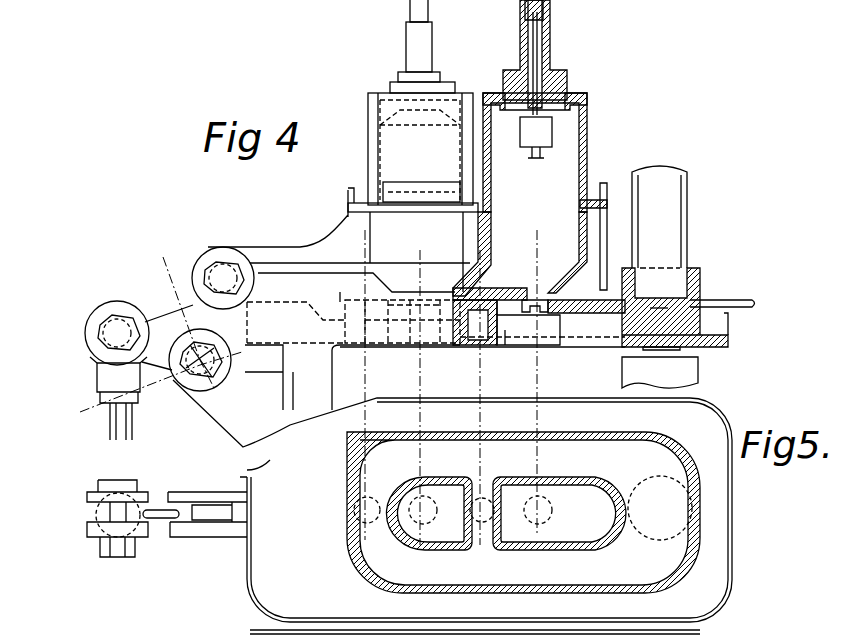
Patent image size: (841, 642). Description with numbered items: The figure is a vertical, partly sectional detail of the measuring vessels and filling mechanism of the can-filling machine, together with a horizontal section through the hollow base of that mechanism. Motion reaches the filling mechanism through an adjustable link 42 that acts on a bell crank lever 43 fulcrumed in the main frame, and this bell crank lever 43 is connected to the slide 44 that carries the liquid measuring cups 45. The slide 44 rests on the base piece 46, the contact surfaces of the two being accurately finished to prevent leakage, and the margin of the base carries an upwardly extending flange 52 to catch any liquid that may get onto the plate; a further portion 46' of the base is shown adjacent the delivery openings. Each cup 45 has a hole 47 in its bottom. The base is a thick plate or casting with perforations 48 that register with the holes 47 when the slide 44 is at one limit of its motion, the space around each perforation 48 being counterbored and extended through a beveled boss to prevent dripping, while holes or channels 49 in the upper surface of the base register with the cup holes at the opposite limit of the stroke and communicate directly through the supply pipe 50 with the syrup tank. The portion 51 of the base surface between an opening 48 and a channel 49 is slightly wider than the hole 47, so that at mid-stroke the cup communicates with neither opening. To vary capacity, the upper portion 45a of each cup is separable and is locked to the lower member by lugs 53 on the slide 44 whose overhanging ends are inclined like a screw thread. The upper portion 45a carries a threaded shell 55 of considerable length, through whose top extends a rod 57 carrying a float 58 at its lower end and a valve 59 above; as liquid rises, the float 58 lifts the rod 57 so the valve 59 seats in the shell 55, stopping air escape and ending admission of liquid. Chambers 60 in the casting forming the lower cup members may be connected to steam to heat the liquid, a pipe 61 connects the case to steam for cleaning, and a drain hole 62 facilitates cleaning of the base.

In FIG. 4, the adjustable link 42 is at (108, 393).
In FIG. 5, the adjustable link 42 is at (92, 535).
In FIG. 4, the bell crank lever 43 is at (160, 338).
In FIG. 5, the bell crank lever 43 is at (158, 510).
In FIG. 4, the slide 44 is at (339, 246).
In FIG. 5, the slide 44 is at (190, 530).
In FIG. 4, the liquid measuring cups 45 is at (442, 366).
In FIG. 4, the upper portion of the measuring cup 45a is at (477, 152).
In FIG. 5, the base piece 46 is at (491, 512).
In FIG. 4, the base plate portion 46' is at (586, 318).
In FIG. 4, the holes in the bottoms of the measuring cups 47 is at (535, 295).
In FIG. 4, the perforations 48 is at (528, 330).
In FIG. 4, the holes or channels 49 is at (465, 340).
In FIG. 4, the supply pipe 50 is at (672, 213).
In FIG. 4, the portion of the upper surface of the base 51 is at (505, 347).
In FIG. 4, the upwardly extending flange 52 is at (431, 373).
In FIG. 5, the upwardly extending flange 52 is at (732, 545).
In FIG. 4, the lugs 53 is at (421, 181).
In FIG. 4, the threaded shell 55 is at (522, 45).
In FIG. 4, the rod 57 is at (540, 52).
In FIG. 4, the float 58 is at (536, 137).
In FIG. 4, the valve 59 is at (545, 22).
In FIG. 4, the chambers 60 is at (486, 248).
In FIG. 4, the pipe 61 is at (758, 303).
In FIG. 4, the drain hole 62 is at (655, 350).